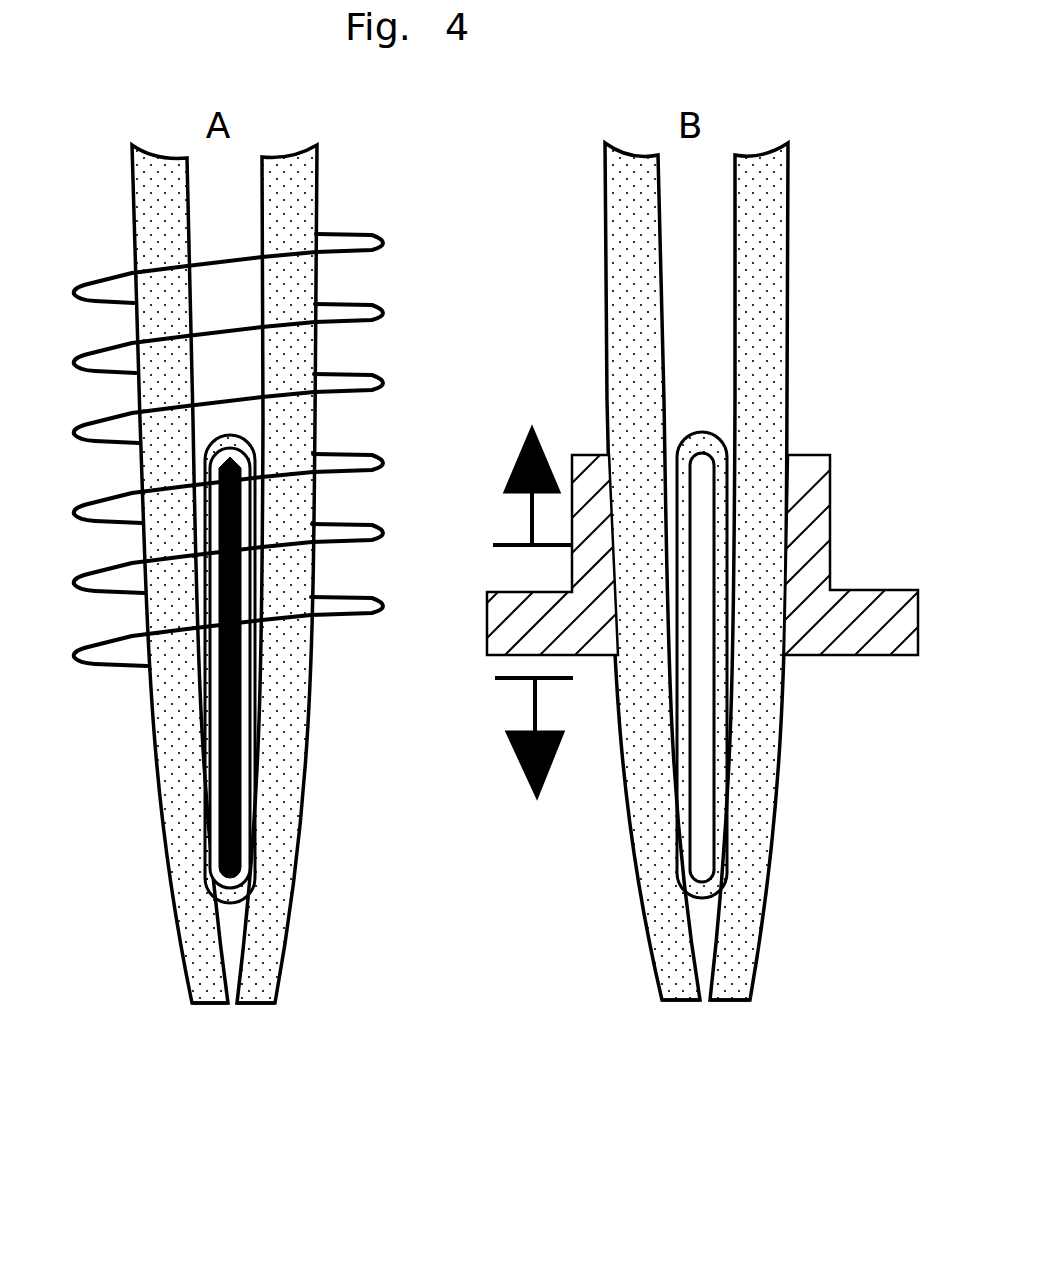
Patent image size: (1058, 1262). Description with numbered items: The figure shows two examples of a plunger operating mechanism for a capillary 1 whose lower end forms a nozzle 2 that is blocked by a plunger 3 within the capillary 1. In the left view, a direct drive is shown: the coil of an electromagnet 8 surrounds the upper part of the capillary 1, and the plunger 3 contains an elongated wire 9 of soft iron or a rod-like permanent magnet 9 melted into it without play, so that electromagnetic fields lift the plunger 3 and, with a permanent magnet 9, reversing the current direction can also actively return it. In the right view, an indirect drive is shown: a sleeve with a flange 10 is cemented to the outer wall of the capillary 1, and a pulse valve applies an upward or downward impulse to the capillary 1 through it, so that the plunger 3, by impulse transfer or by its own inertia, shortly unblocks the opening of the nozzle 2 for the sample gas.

In FIG. 4A, the capillary 1 is at (165, 848).
In FIG. 4B, the capillary 1 is at (637, 843).
In FIG. 4A, the nozzle 2 is at (232, 1022).
In FIG. 4B, the nozzle 2 is at (700, 1022).
In FIG. 4A, the plunger 3 is at (245, 880).
In FIG. 4B, the plunger 3 is at (718, 875).
In FIG. 4A, the electromagnet 8 is at (385, 445).
In FIG. 4A, the elongated wire or rod-like permanent magnet 9 is at (243, 657).
In FIG. 4B, the sleeve with a flange 10 is at (883, 575).